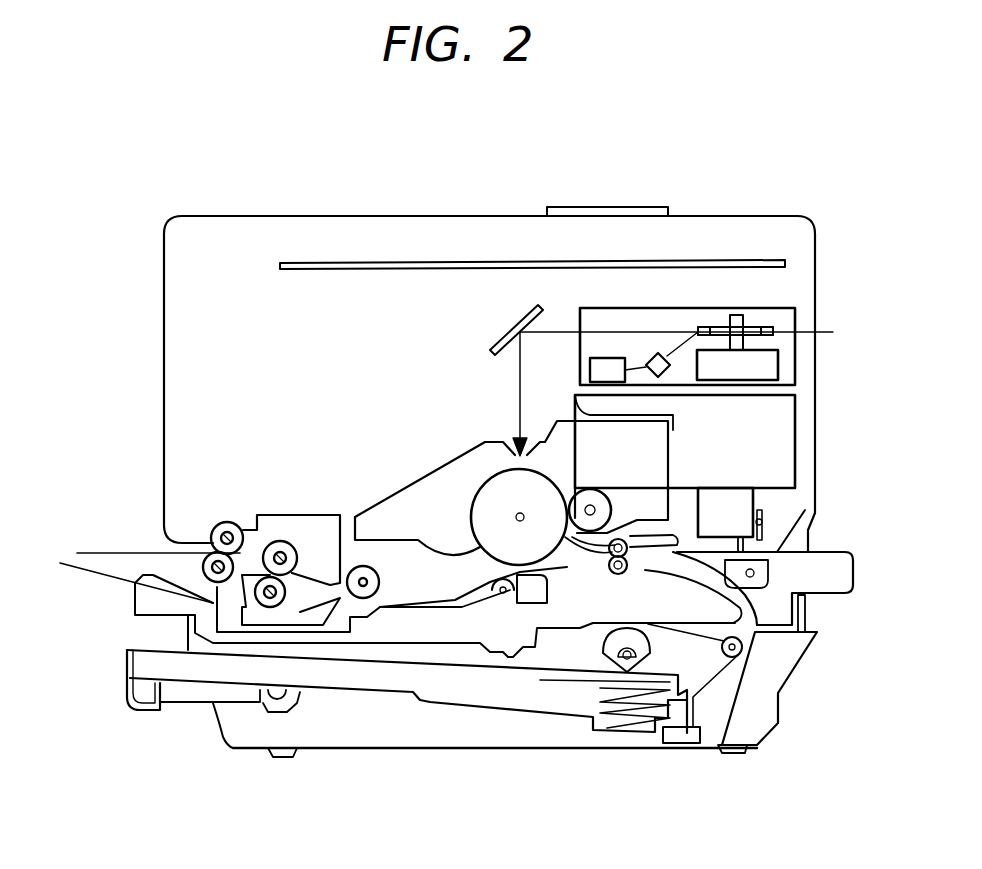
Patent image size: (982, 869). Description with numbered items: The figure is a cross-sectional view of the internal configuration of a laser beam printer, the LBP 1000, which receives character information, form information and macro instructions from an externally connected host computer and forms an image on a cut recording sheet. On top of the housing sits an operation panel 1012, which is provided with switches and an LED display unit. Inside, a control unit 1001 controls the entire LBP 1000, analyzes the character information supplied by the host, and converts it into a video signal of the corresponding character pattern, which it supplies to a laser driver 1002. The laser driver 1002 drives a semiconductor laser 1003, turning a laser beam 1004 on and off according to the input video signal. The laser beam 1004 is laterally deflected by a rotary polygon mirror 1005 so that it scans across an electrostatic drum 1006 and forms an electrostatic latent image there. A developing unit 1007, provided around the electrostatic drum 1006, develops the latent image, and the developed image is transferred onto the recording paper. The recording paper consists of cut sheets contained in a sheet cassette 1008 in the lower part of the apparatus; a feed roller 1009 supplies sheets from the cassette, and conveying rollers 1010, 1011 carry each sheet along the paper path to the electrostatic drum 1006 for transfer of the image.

The LBP 1000 is at (737, 216).
The control unit 1001 is at (486, 262).
The laser driver 1002 is at (590, 370).
The semiconductor laser 1003 is at (665, 375).
The laser beam 1004 is at (637, 332).
The rotary polygon mirror 1005 is at (698, 347).
The electrostatic drum 1006 is at (494, 485).
The developing unit 1007 is at (403, 500).
The sheet cassette 1008 is at (127, 672).
The feed roller 1009 is at (620, 647).
The conveying roller 1010 is at (742, 652).
The conveying roller 1011 is at (630, 567).
The operation panel 1012 is at (632, 207).